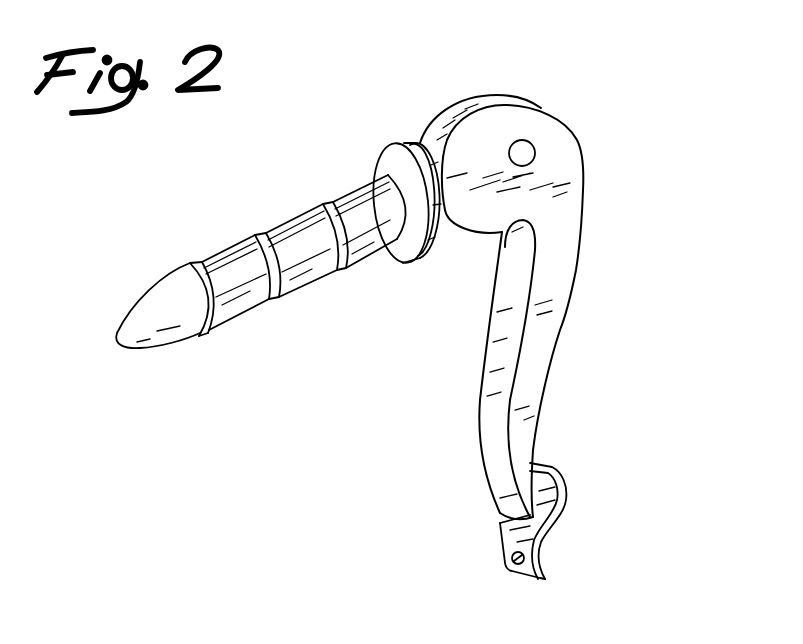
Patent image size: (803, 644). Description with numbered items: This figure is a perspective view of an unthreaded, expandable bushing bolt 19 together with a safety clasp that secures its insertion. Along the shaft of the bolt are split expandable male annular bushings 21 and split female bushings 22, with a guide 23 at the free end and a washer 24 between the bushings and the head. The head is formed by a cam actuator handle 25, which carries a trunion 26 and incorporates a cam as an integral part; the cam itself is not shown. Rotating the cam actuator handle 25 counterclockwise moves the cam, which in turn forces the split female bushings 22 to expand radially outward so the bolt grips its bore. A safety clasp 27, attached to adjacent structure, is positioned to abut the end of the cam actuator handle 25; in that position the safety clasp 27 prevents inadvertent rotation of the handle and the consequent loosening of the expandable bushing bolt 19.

The expandable bushing bolt 19 is at (610, 112).
The split expandable male annular bushings 21 is at (255, 234).
The split female bushings 22 is at (352, 272).
The guide 23 is at (158, 352).
The washer 24 is at (412, 132).
The cam actuator handle 25 is at (540, 106).
The trunion 26 is at (530, 162).
The safety clasp 27 is at (568, 489).